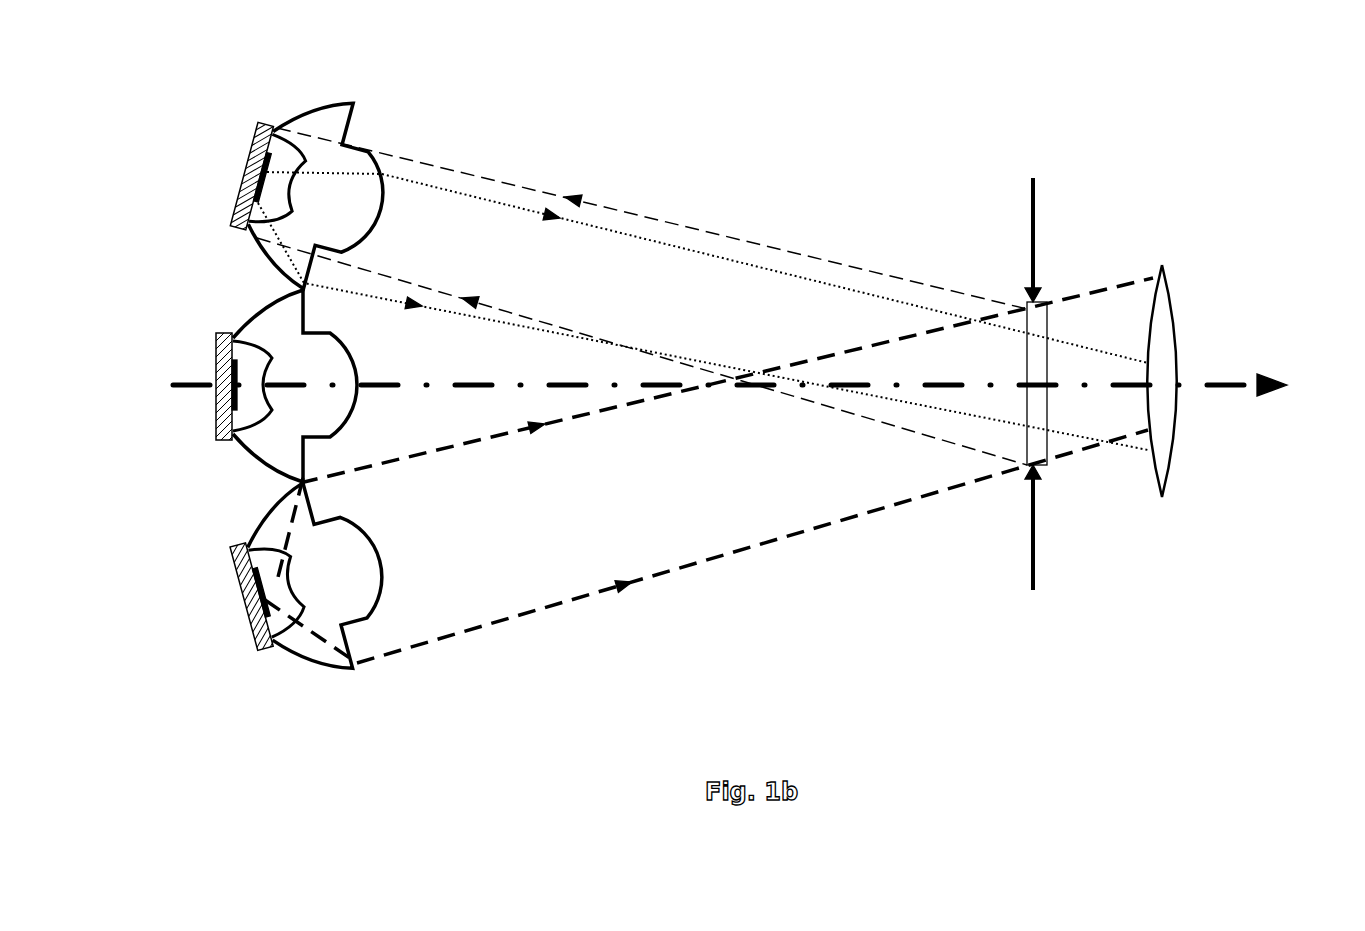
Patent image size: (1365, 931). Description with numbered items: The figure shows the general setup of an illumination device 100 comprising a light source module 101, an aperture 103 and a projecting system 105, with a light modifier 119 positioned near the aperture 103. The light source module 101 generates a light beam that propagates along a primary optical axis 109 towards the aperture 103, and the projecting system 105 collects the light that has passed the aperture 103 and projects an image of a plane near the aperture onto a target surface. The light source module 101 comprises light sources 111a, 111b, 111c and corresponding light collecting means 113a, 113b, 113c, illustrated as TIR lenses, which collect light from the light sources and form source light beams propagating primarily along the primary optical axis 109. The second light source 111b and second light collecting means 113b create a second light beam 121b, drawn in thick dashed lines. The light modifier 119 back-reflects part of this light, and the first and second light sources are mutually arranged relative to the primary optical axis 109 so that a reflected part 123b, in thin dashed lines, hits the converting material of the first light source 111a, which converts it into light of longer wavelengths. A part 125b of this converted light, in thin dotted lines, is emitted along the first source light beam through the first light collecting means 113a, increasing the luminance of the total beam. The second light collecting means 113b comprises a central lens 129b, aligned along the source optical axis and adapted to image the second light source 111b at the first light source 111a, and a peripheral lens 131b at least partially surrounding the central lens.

The illumination device 100 is at (1113, 122).
The light source module 101 is at (242, 728).
The aperture 103 is at (1035, 568).
The projecting system 105 is at (1163, 497).
The primary optical axis 109 is at (1272, 392).
The first light source 111a is at (252, 162).
The second light source 111b is at (245, 583).
The light source 111c is at (232, 367).
The first light collecting means 113a is at (258, 240).
The second light collecting means 113b is at (297, 652).
The light collecting means 113c is at (252, 450).
The light modifier 119 is at (1025, 333).
The second light beam 121b is at (492, 624).
The reflected part of the second light beam 123b is at (579, 192).
The converted light 125b is at (730, 262).
The central lens 129b is at (365, 562).
The peripheral lens 131b is at (335, 655).